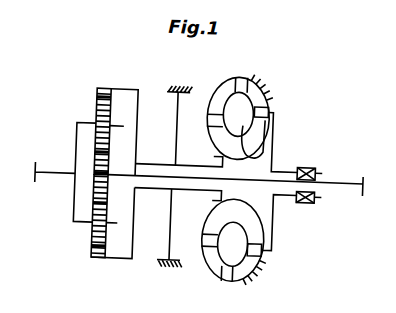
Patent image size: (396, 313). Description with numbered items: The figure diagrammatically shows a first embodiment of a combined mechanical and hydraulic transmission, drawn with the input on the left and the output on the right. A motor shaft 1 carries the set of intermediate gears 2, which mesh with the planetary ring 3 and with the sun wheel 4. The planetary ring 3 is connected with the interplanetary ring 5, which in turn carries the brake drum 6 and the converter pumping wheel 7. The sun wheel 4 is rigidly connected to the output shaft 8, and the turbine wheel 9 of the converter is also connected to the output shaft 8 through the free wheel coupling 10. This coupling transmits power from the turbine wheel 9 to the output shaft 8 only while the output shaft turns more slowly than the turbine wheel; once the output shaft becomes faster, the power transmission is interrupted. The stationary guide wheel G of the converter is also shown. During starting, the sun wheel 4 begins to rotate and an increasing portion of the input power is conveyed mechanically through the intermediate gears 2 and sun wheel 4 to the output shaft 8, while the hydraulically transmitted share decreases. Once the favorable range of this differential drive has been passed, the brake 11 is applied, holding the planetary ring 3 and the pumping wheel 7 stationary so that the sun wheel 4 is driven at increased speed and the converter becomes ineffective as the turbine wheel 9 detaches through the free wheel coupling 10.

The motor shaft 1 is at (65, 178).
The set of intermediate gears 2 is at (94, 245).
The planetary ring 3 is at (94, 92).
The sun wheel 4 is at (93, 177).
The interplanetary ring 5 is at (182, 166).
The brake drum 6 is at (175, 126).
The converter pumping wheel 7 is at (253, 139).
The output shaft 8 is at (136, 175).
The turbine wheel 9 is at (266, 110).
The free wheel coupling 10 is at (302, 164).
The brake 11 is at (175, 166).
The stationary guide wheel G is at (238, 79).